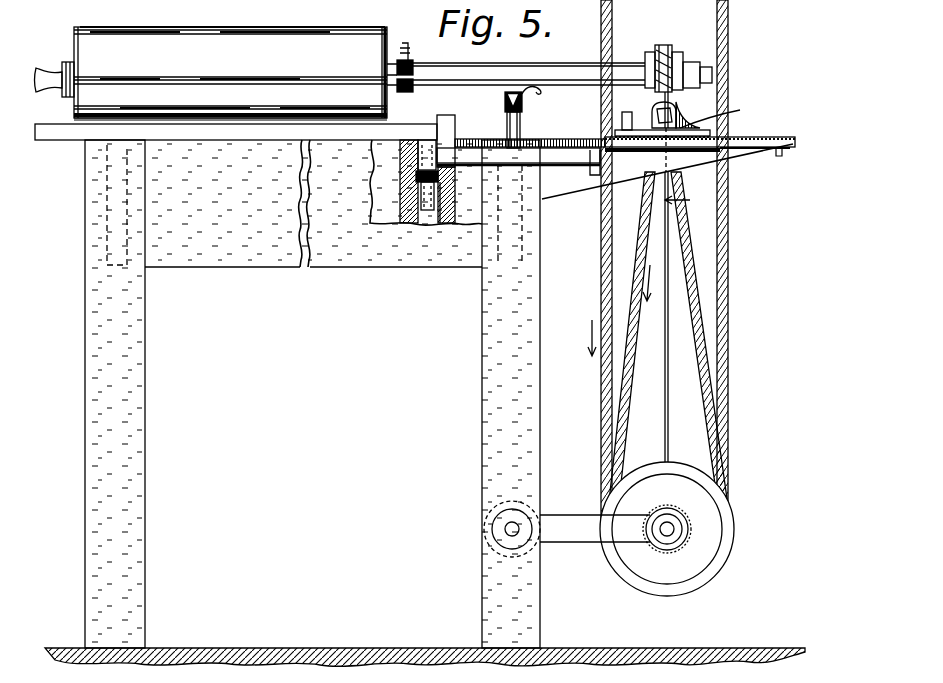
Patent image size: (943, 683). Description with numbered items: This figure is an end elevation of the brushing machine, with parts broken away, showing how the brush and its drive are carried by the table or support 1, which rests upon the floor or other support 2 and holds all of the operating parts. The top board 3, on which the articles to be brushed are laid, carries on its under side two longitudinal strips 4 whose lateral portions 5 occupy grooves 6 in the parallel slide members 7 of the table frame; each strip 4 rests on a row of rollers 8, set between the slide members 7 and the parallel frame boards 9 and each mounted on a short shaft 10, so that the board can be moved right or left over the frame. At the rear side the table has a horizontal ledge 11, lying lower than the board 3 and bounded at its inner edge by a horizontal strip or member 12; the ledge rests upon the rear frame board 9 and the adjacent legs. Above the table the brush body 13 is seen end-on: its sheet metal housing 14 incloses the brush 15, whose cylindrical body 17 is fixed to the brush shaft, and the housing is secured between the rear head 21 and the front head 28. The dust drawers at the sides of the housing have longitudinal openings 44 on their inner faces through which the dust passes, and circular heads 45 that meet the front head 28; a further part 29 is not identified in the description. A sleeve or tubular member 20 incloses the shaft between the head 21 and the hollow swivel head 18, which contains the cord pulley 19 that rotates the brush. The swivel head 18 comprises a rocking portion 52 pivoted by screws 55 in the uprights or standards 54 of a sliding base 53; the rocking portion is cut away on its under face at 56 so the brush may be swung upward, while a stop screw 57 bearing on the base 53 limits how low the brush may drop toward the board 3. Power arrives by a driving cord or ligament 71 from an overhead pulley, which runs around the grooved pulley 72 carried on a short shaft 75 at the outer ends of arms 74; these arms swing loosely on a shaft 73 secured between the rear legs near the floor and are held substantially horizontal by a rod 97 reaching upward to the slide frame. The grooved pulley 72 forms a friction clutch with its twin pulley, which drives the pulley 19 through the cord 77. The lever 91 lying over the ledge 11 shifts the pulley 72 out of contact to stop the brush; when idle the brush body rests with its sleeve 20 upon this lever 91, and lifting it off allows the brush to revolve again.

The table 1 is at (312, 394).
The floor 2 is at (302, 648).
The top board 3 is at (52, 140).
The longitudinal strips 4 is at (427, 140).
The lateral portions 5 is at (400, 172).
The grooves 6 is at (416, 178).
The slide members 7 is at (404, 226).
The rollers 8 is at (428, 214).
The frame boards 9 is at (446, 225).
The short shaft 10 is at (455, 200).
The horizontal ledge 11 is at (564, 158).
The horizontal strip 12 is at (450, 120).
The brush body 13 is at (296, 22).
The sheet metal housing 14 is at (230, 72).
The brush 15 is at (258, 120).
The cylindrical body 17 is at (663, 45).
The swivel head 18 is at (647, 58).
The cord pulley 19 is at (678, 54).
The sleeve 20 is at (567, 63).
The rear head 21 is at (388, 34).
The front head 28 is at (76, 44).
The collar 29 is at (68, 76).
The longitudinal openings 44 is at (409, 52).
The circular heads 45 is at (414, 82).
The rocking portion 52 is at (656, 106).
The sliding base 53 is at (706, 148).
The uprights 54 is at (780, 156).
The screws 55 is at (684, 110).
The cut-away 56 is at (721, 113).
The stop screw 57 is at (622, 116).
The driving cord 71 is at (601, 282).
The grooved pulley 72 is at (705, 574).
The shaft 73 is at (510, 528).
The arms 74 is at (568, 518).
The short shaft 75 is at (675, 530).
The cord 77 is at (694, 272).
The lever 91 is at (532, 117).
The rod 97 is at (669, 398).